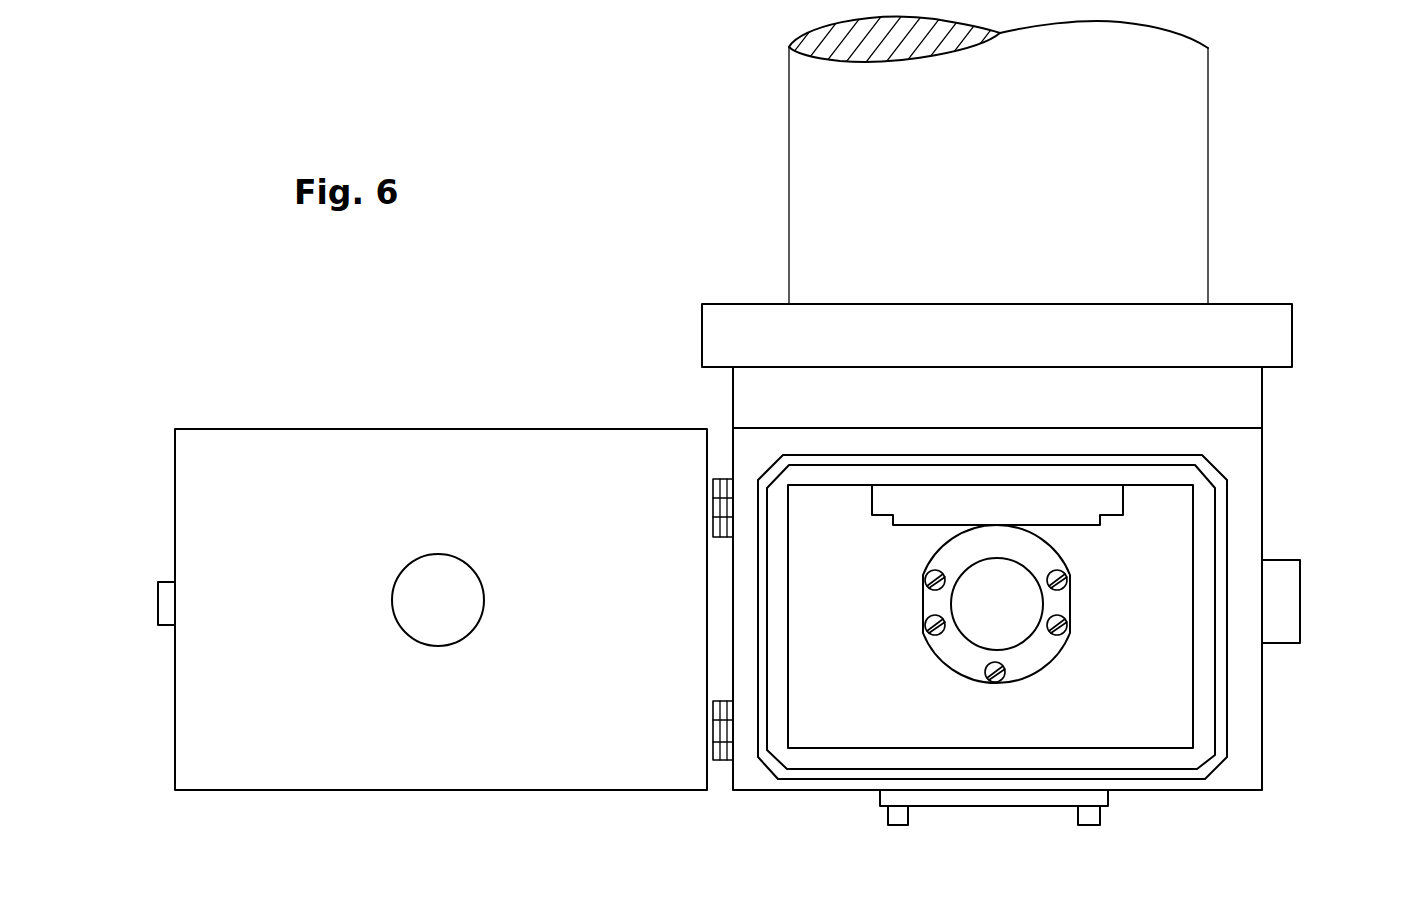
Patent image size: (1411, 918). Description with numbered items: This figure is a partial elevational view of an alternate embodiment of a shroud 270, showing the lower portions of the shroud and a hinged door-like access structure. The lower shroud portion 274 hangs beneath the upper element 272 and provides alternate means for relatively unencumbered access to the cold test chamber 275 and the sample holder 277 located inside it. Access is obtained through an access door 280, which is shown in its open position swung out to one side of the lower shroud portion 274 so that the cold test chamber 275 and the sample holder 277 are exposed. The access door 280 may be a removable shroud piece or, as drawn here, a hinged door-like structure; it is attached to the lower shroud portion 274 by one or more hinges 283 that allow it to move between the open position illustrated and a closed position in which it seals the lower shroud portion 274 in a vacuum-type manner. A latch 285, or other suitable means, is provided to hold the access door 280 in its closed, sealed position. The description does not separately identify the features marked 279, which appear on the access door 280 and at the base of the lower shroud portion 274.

The shroud 270 is at (727, 270).
The cylindrical housing / shaft 272 is at (1222, 152).
The lower shroud portion 274 is at (1270, 457).
The cold test chamber 275 is at (845, 740).
The sample holder 277 is at (1045, 655).
The vent opening / support 279 is at (423, 567).
The access door 280 is at (251, 460).
The hinges 283 is at (721, 480).
The latch 285 is at (160, 598).